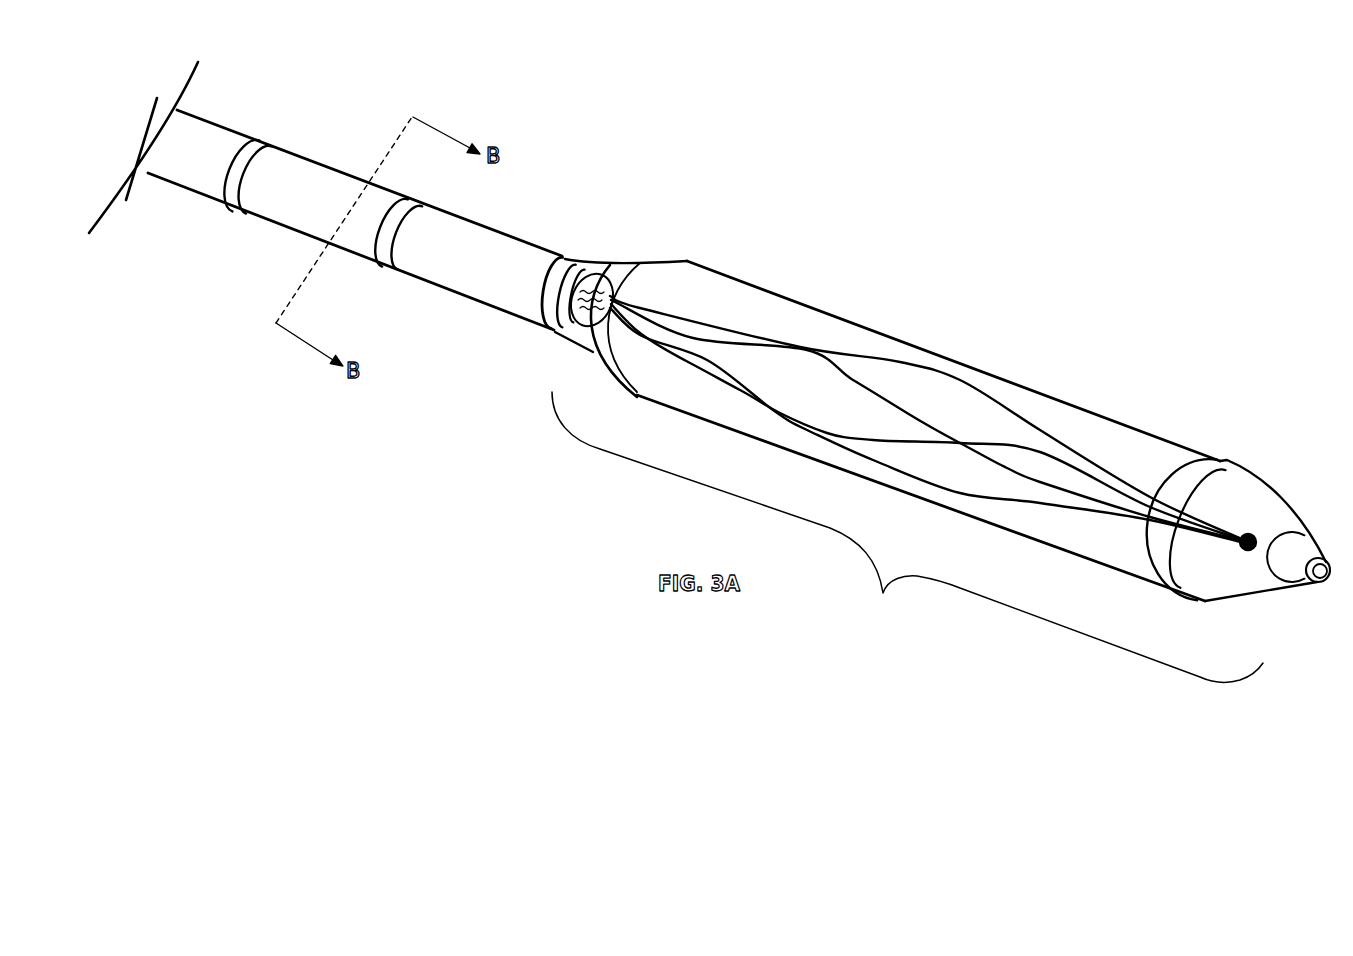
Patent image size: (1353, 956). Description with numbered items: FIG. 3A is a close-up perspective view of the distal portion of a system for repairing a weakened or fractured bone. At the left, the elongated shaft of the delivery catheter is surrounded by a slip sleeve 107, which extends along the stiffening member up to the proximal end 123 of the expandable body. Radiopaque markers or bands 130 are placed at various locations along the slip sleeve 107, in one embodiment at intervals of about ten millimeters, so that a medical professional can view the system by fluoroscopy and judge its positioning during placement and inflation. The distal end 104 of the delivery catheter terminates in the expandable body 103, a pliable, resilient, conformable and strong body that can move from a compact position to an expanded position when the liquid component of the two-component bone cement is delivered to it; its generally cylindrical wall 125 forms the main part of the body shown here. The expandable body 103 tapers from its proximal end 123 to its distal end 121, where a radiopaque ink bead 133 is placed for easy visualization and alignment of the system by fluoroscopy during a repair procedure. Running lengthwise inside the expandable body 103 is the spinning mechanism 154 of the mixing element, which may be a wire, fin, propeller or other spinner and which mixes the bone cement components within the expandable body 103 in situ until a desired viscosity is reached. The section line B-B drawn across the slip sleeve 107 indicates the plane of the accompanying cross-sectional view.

The expandable body 103 is at (907, 537).
The distal end 104 is at (565, 248).
The slip sleeve 107 is at (287, 222).
The distal end 121 is at (1300, 507).
The proximal end 123 is at (615, 257).
The balloon body 125 is at (1152, 438).
The radiopaque bands 130 is at (395, 270).
The radiopaque ink bead 133 is at (1320, 583).
The spinning mechanism 154 is at (858, 382).